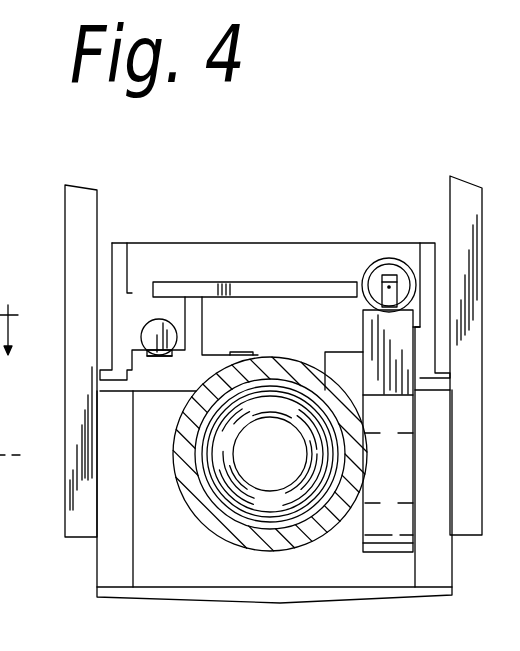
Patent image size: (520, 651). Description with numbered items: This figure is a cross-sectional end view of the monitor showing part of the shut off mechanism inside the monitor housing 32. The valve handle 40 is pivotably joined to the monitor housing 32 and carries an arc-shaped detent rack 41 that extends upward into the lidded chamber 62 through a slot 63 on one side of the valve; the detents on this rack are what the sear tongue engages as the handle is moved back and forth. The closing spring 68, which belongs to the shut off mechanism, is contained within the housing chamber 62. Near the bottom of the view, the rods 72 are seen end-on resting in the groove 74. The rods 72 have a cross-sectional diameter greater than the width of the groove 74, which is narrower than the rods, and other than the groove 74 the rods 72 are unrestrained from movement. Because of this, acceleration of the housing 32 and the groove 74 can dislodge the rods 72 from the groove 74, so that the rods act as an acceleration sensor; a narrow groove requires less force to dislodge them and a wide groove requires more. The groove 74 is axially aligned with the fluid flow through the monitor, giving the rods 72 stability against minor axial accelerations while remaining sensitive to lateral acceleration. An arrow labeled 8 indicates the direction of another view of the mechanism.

The view direction arrow 8 is at (10, 380).
The monitor housing 32 is at (183, 290).
The valve handle 40 is at (88, 229).
The arc-shaped detent rack 41 is at (393, 363).
The lidded chamber 62 is at (270, 257).
The slot 63 is at (358, 378).
The closing spring 68 is at (378, 263).
The rods 72 is at (152, 341).
The groove 74 is at (155, 356).